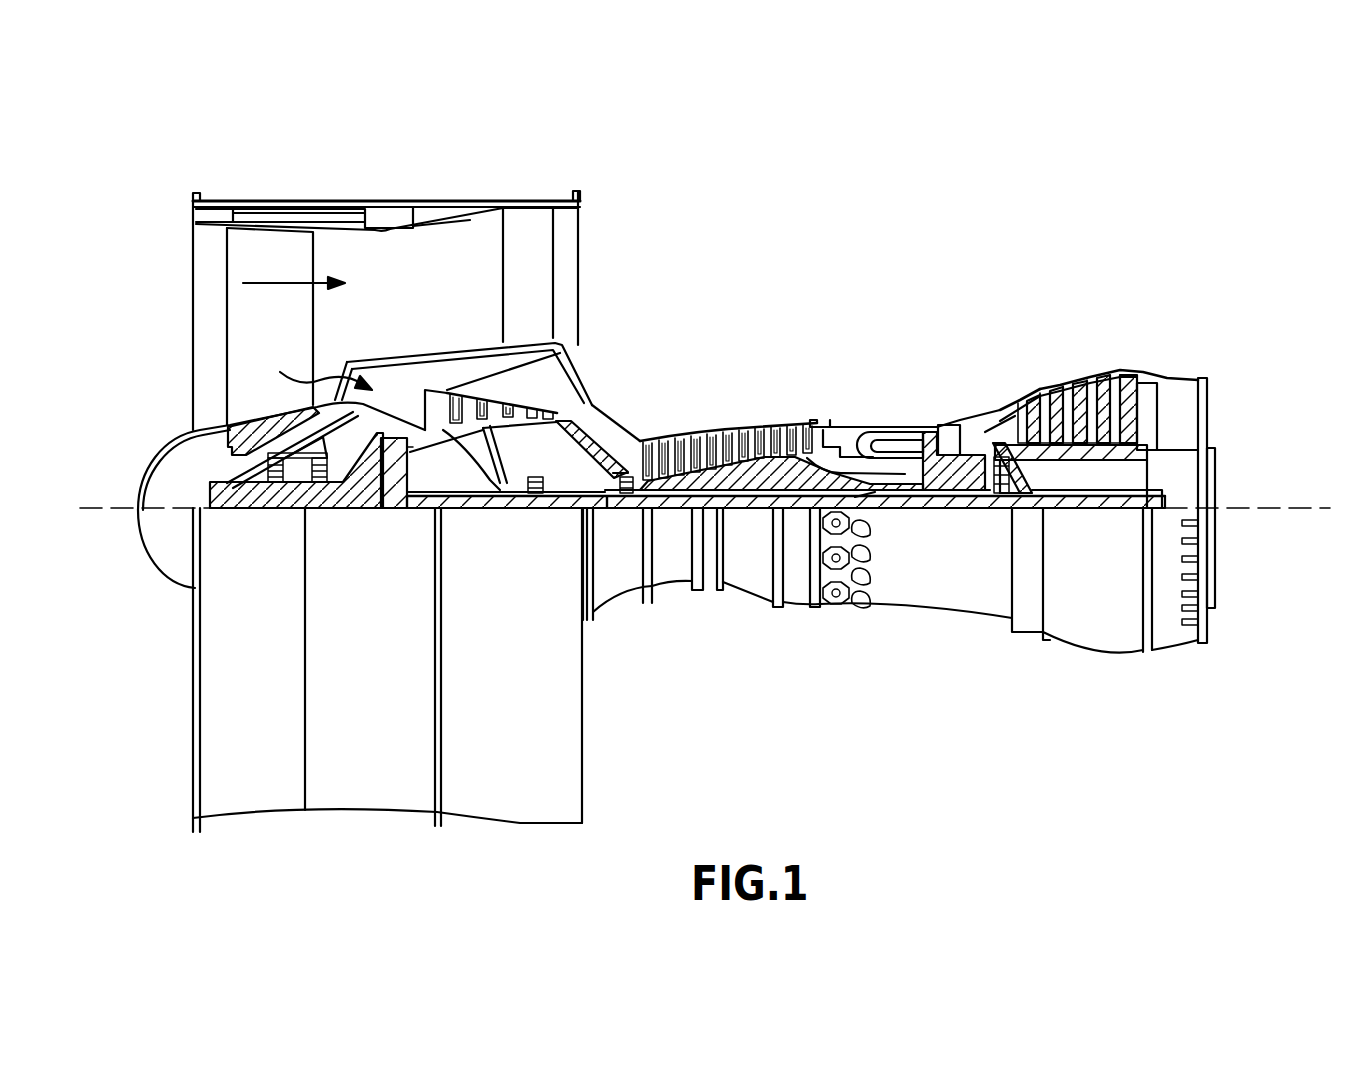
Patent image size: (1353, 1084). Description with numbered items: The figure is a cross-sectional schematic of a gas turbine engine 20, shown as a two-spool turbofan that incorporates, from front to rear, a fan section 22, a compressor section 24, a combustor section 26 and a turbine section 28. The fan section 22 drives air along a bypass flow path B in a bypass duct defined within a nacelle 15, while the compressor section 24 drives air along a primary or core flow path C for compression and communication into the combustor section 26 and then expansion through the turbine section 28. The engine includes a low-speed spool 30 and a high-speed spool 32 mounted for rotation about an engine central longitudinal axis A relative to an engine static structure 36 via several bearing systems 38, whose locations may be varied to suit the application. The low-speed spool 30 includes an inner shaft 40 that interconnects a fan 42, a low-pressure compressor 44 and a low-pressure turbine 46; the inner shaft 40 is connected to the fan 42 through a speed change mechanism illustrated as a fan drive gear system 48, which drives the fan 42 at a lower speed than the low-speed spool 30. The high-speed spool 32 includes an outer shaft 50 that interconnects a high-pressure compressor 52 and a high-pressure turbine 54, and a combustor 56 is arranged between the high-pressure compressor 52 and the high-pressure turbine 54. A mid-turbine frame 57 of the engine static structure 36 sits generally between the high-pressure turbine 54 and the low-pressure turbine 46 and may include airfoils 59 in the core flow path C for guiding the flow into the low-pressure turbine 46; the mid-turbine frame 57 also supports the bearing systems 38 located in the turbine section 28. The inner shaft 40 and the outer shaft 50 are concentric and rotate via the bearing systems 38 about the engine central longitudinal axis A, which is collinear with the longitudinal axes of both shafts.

The gas turbine engine 20 is at (903, 212).
The fan section 22 is at (306, 190).
The nacelle 15 is at (383, 213).
The fan 42 is at (279, 325).
The compressor section 24 is at (629, 397).
The combustor section 26 is at (869, 383).
The turbine section 28 is at (1029, 357).
The low-speed spool 30 is at (752, 503).
The high-speed spool 32 is at (806, 460).
The engine static structure 36 is at (798, 580).
The bearing systems 38 is at (536, 493).
The inner shaft 40 is at (609, 502).
The low-pressure compressor 44 is at (513, 403).
The low-pressure turbine 46 is at (1079, 392).
The fan drive gear system 48 is at (399, 497).
The outer shaft 50 is at (860, 488).
The high-pressure compressor 52 is at (755, 437).
The high-pressure turbine 54 is at (935, 432).
The combustor 56 is at (887, 443).
The mid-turbine frame 57 is at (993, 411).
The airfoils 59 is at (990, 440).
The engine central longitudinal axis A is at (1259, 506).
The bypass flow path B is at (272, 282).
The core flow path C is at (316, 373).